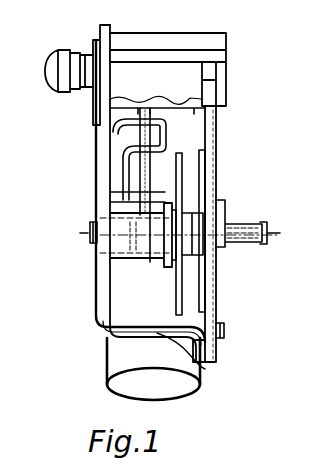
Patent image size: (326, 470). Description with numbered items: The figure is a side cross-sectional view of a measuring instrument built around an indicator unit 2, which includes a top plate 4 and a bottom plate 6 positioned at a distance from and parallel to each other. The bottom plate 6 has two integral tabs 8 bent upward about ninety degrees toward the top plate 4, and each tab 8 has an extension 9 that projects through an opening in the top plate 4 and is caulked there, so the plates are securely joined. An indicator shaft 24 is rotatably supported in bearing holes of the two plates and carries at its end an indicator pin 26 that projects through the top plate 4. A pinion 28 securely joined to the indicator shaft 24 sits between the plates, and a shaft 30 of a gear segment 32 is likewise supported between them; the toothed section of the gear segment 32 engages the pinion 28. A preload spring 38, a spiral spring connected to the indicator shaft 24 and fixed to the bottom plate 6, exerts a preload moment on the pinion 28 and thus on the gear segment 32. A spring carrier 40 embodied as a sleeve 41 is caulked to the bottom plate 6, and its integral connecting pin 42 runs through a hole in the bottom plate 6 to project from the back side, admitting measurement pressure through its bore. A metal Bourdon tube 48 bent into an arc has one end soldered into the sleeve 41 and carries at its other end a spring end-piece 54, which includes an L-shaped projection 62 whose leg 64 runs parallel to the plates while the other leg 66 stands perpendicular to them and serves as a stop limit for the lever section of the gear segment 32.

The indicator unit 2 is at (82, 250).
The top plate 4 is at (210, 164).
The bottom plate 6 is at (97, 279).
The tabs 8 is at (205, 369).
The extension 9 is at (223, 331).
The indicator shaft 24 is at (202, 268).
The indicator pin 26 is at (238, 217).
The pinion 28 is at (139, 242).
The shaft 30 is at (185, 113).
The gear segment 32 is at (108, 190).
The preload spring 38 is at (203, 297).
The spring carrier 40 is at (166, 31).
The sleeve 41 is at (213, 44).
The connecting pin 42 is at (62, 62).
The Bourdon tube 48 is at (203, 78).
The spring end-piece 54 is at (188, 198).
The L-shaped projection 62 is at (127, 183).
The leg 64 is at (135, 159).
The leg 66 is at (110, 129).